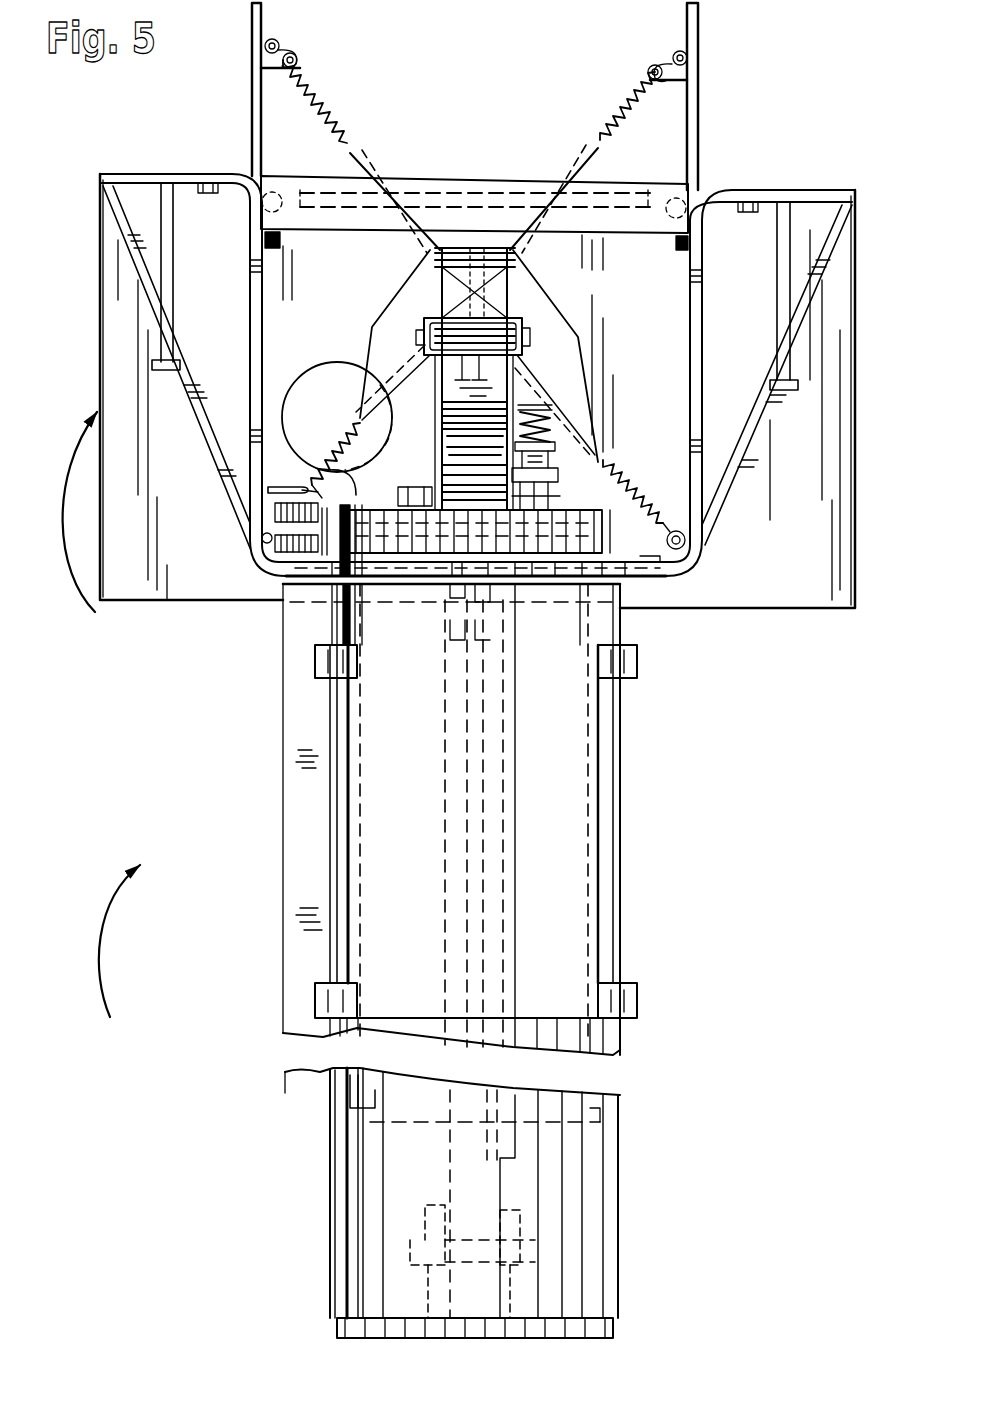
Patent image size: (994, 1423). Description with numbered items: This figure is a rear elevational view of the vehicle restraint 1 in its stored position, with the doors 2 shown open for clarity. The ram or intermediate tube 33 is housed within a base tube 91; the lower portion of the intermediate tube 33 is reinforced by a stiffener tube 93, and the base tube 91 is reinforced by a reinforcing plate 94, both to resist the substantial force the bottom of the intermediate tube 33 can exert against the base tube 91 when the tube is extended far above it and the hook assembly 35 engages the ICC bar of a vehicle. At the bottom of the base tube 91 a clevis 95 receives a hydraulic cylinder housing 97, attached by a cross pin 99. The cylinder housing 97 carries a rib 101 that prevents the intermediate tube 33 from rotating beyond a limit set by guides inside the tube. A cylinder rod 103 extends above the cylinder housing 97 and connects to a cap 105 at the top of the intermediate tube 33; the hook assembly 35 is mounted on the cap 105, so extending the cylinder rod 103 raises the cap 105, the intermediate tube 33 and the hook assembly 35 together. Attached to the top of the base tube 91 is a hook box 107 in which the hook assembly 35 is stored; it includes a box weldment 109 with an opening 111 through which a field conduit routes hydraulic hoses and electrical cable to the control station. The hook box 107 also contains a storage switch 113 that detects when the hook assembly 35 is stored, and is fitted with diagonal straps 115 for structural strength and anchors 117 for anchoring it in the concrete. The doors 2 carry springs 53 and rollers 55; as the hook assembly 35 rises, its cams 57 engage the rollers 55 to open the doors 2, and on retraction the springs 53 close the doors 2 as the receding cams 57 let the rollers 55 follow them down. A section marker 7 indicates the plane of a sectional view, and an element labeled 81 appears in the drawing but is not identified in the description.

The vehicle restraint 1 is at (119, 954).
The doors 2 is at (252, 120).
The section line 7 is at (645, 330).
The intermediate tube 33 is at (352, 1086).
The hook assembly 35 is at (376, 271).
The springs 53 is at (598, 142).
The roller 55 is at (640, 76).
The cams 57 is at (392, 318).
The stop block 81 is at (412, 505).
The base tube 91 is at (340, 1172).
The stiffener tube 93 is at (372, 1107).
The reinforcing plate 94 is at (636, 663).
The clevis 95 is at (515, 1292).
The hydraulic cylinder housing 97 is at (498, 735).
The cross pin 99 is at (425, 1252).
The rib 101 is at (475, 790).
The cylinder rod 103 is at (612, 618).
The cap 105 is at (476, 547).
The hook box 107 is at (93, 539).
The box weldment 109 is at (268, 556).
The opening 111 is at (332, 428).
The storage switch 113 is at (346, 500).
The diagonal straps 115 is at (120, 210).
The anchors 117 is at (186, 200).